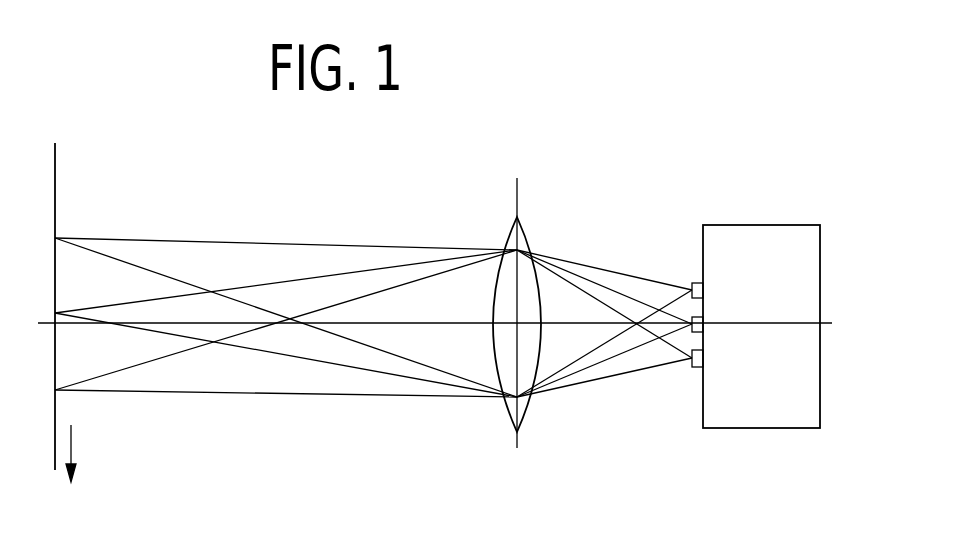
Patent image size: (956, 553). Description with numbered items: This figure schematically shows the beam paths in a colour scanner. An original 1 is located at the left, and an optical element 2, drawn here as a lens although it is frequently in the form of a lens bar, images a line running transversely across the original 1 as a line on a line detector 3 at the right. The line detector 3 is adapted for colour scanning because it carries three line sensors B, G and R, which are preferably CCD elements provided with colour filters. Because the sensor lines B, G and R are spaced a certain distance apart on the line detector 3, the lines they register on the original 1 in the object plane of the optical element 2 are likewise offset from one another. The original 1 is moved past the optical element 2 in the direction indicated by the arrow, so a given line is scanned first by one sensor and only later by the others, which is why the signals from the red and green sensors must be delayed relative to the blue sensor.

The original 1 is at (57, 220).
The optical element 2 is at (524, 229).
The line detector 3 is at (742, 237).